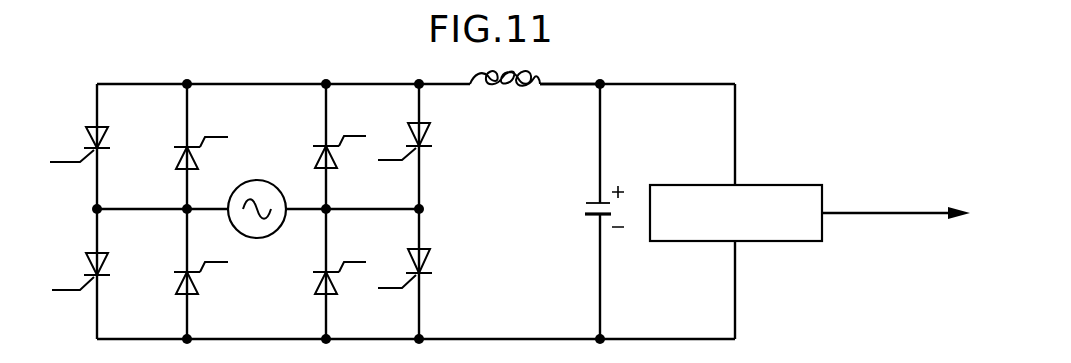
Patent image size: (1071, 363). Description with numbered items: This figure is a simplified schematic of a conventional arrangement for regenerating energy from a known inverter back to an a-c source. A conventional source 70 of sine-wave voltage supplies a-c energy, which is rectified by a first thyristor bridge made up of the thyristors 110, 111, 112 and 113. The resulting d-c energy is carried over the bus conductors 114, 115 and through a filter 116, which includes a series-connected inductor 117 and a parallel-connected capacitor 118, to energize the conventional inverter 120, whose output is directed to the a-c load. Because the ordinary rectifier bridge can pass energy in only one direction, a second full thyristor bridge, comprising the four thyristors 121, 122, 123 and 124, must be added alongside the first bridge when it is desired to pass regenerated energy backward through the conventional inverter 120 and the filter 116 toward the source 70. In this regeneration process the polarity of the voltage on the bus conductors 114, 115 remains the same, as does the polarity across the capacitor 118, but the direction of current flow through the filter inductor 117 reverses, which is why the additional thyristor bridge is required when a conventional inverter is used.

The source 70 is at (257, 198).
The thyristor 110 is at (206, 140).
The thyristor 111 is at (211, 281).
The thyristor 112 is at (346, 140).
The thyristor 113 is at (346, 265).
The bus conductor 114 is at (449, 83).
The bus conductor 115 is at (480, 339).
The filter 116 is at (557, 166).
The inductor 117 is at (505, 96).
The capacitor 118 is at (592, 211).
The conventional inverter 120 is at (810, 202).
The thyristor 121 is at (75, 144).
The thyristor 122 is at (74, 269).
The thyristor 123 is at (424, 149).
The thyristor 124 is at (424, 268).